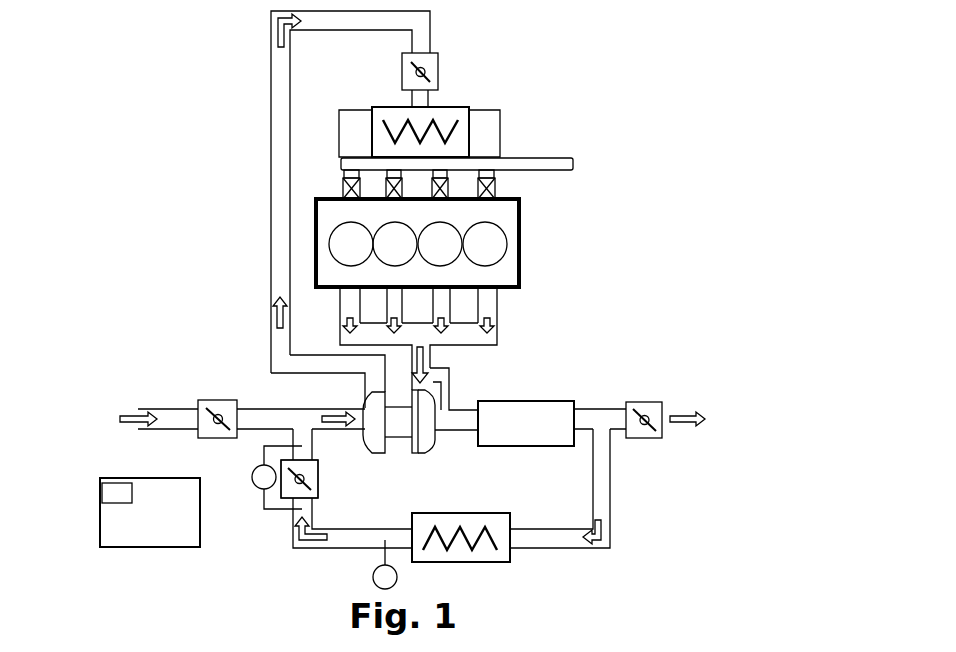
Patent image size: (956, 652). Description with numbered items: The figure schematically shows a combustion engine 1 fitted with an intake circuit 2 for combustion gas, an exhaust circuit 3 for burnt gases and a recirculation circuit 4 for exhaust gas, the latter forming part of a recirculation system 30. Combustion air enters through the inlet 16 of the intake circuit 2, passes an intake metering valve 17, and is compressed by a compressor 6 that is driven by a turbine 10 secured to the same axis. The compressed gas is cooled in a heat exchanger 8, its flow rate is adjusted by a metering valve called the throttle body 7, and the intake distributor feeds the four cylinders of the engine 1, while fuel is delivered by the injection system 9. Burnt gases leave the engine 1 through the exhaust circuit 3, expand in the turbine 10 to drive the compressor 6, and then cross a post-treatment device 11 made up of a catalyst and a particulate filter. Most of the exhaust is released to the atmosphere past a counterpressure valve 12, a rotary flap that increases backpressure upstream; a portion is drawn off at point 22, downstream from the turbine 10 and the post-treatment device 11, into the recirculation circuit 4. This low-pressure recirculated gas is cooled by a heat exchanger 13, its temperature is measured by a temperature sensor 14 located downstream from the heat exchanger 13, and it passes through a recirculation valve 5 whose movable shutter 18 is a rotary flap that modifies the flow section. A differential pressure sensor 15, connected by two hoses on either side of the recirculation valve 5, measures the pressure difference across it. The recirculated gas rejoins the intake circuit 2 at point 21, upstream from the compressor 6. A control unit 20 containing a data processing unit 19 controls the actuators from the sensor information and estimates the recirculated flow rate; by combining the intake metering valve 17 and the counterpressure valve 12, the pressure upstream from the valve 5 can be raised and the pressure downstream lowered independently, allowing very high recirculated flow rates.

The combustion engine 1 is at (520, 241).
The intake circuit 2 is at (248, 211).
The exhaust circuit 3 is at (487, 372).
The recirculation circuit 4 is at (592, 562).
The recirculation valve 5 is at (318, 470).
The compressor 6 is at (370, 400).
The throttle body 7 is at (430, 63).
The heat exchanger 8 is at (462, 140).
The injection system 9 is at (548, 163).
The turbine 10 is at (440, 443).
The post-treatment device 11 is at (538, 410).
The counterpressure valve 12 is at (650, 438).
The heat exchanger 13 is at (485, 550).
The temperature sensor 14 is at (372, 577).
The differential pressure sensor 15 is at (258, 483).
The inlet 16 is at (135, 424).
The intake metering valve 17 is at (215, 405).
The movable shutter 18 is at (318, 482).
The data processing unit 19 is at (112, 493).
The control unit 20 is at (108, 533).
The recirculation point of the intake circuit 21 is at (303, 418).
The exhaust gas entry point 22 is at (600, 418).
The recirculation system 30 is at (208, 567).